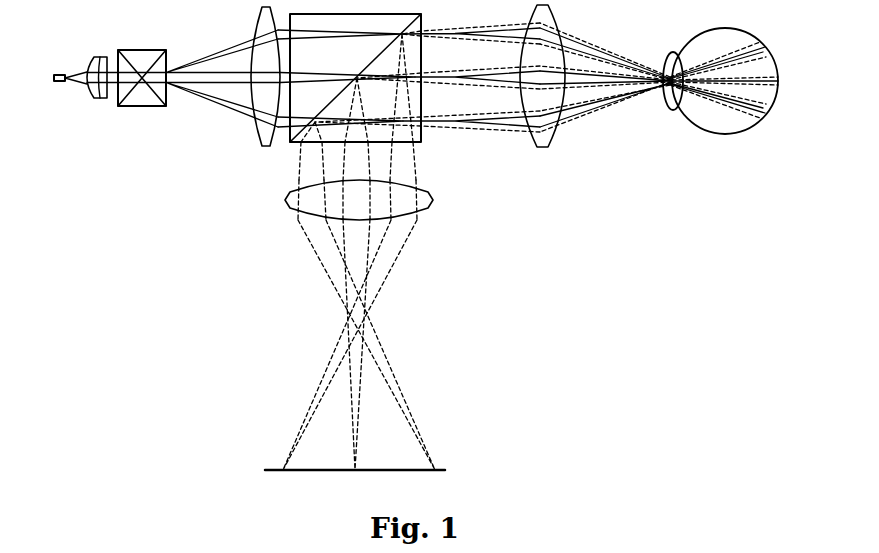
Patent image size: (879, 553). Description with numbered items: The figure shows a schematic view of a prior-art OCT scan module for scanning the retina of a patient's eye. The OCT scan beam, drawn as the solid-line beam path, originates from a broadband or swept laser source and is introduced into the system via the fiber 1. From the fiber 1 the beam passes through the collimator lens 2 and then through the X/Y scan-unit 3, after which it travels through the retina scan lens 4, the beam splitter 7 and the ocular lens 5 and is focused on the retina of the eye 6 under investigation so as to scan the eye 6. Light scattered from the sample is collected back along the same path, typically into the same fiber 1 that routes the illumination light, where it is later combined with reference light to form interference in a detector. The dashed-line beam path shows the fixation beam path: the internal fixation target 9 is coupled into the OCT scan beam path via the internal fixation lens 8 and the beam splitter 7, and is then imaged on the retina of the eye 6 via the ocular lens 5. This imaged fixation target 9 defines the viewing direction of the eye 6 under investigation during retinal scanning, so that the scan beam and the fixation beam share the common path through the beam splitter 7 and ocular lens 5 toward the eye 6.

The fiber 1 is at (59, 90).
The collimator lens 2 is at (97, 94).
The X/Y scan-unit 3 is at (142, 91).
The retina scan lens 4 is at (265, 87).
The ocular lens 5 is at (542, 91).
The eye 6 is at (720, 102).
The beam splitter 7 is at (367, 83).
The internal fixation lens 8 is at (372, 200).
The internal fixation target 9 is at (362, 467).